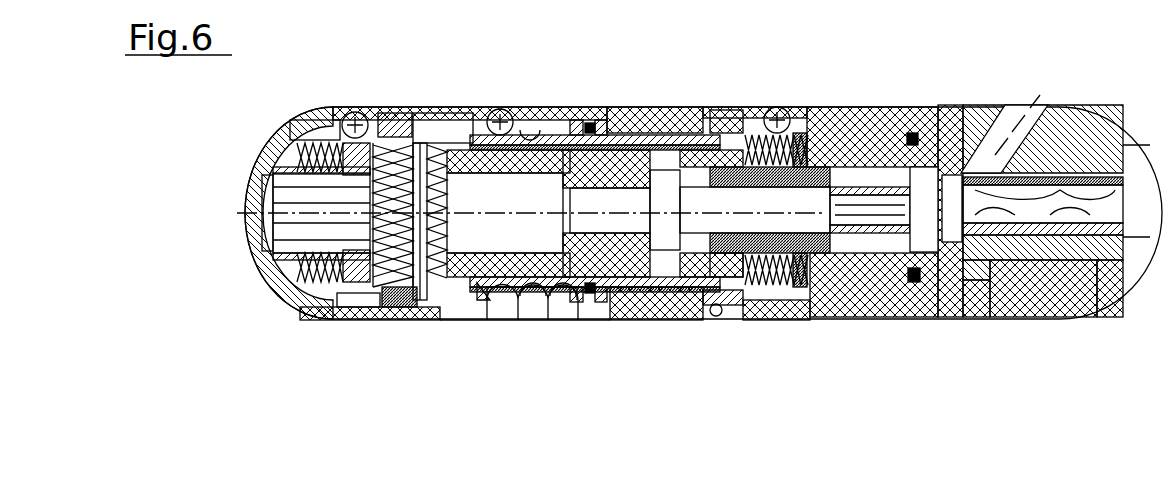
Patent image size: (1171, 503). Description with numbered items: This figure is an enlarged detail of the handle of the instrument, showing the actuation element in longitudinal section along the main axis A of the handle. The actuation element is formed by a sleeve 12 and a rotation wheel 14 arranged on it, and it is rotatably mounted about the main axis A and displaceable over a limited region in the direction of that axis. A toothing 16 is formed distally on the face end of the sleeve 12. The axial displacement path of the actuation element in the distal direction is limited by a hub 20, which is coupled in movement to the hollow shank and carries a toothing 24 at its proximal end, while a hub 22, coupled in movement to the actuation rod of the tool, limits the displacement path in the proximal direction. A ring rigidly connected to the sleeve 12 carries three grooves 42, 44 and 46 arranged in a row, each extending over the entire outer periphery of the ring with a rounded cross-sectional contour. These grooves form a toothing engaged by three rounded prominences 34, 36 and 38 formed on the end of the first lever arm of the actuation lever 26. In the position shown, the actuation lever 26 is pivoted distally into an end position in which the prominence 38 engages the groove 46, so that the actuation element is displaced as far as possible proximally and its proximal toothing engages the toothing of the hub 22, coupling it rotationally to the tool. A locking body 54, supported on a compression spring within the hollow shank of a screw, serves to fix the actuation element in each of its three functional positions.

The sleeve 12 is at (592, 305).
The rotation wheel 14 is at (672, 320).
The toothing 16 is at (440, 320).
The hub 20 is at (345, 318).
The hub 22 is at (728, 318).
The toothing 24 is at (385, 312).
The actuation lever 26 is at (495, 335).
The rounded prominence 34 is at (565, 320).
The rounded prominence 36 is at (535, 320).
The rounded prominence 38 is at (510, 320).
The groove 42 is at (563, 135).
The groove 44 is at (559, 128).
The groove 46 is at (468, 110).
The locking body 54 is at (505, 122).
The main axis A is at (822, 210).